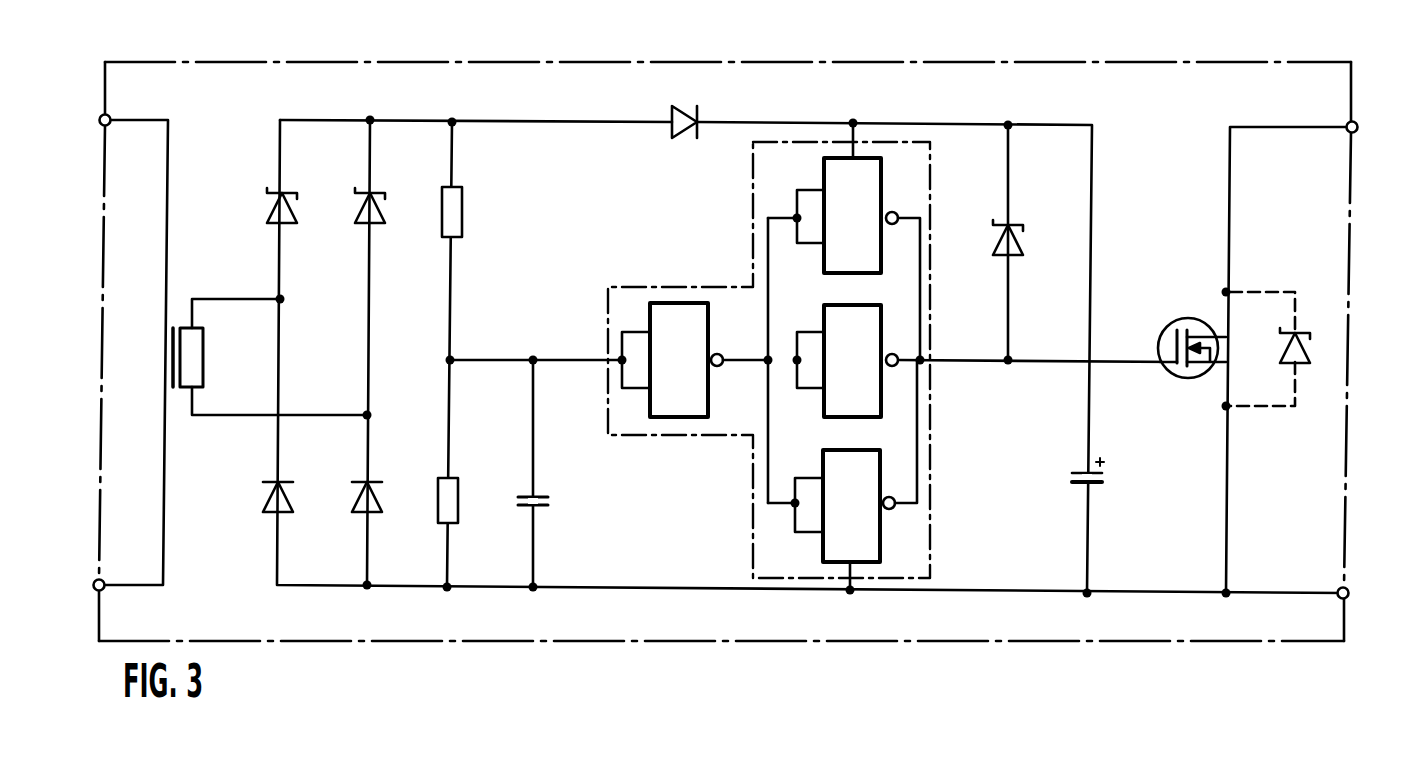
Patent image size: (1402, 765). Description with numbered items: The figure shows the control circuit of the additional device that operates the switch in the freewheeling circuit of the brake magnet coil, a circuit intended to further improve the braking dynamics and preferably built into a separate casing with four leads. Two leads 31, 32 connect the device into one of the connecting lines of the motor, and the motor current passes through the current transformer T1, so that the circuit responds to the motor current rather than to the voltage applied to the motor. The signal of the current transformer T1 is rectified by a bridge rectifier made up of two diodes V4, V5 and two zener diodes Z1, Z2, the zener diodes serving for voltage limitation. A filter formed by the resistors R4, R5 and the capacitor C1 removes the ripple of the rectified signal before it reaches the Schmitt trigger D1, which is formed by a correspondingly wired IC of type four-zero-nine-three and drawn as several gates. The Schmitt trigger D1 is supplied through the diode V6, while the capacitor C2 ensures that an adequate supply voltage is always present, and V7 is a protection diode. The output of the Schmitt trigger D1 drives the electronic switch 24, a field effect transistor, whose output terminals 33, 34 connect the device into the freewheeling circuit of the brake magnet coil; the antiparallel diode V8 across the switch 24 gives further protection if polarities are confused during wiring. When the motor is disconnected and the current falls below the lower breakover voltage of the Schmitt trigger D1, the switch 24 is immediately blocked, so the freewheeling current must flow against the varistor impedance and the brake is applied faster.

The electronic switch 24 is at (1172, 332).
The lead 31 is at (101, 116).
The lead 32 is at (95, 581).
The output terminal 33 is at (1357, 123).
The output terminal 34 is at (1348, 588).
The current transformer T1 is at (270, 357).
The zener diode Z1 is at (295, 197).
The zener diode Z2 is at (385, 197).
The diode V4 is at (291, 489).
The diode V5 is at (379, 489).
The diode V6 is at (682, 103).
The protection diode V7 is at (1024, 233).
The antiparallel-associated diode V8 is at (1285, 349).
The resistor R4 is at (469, 205).
The resistor R5 is at (462, 496).
The capacitor C1 is at (549, 487).
The capacitor C2 is at (1105, 474).
The Schmitt trigger D1 is at (769, 356).